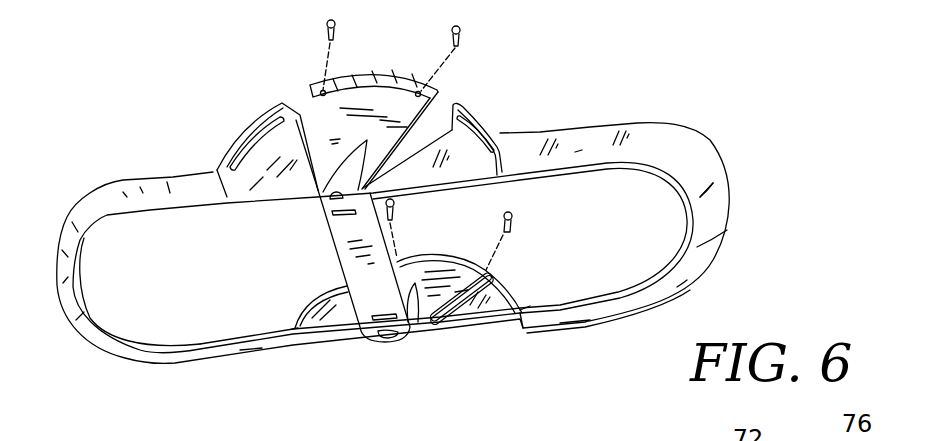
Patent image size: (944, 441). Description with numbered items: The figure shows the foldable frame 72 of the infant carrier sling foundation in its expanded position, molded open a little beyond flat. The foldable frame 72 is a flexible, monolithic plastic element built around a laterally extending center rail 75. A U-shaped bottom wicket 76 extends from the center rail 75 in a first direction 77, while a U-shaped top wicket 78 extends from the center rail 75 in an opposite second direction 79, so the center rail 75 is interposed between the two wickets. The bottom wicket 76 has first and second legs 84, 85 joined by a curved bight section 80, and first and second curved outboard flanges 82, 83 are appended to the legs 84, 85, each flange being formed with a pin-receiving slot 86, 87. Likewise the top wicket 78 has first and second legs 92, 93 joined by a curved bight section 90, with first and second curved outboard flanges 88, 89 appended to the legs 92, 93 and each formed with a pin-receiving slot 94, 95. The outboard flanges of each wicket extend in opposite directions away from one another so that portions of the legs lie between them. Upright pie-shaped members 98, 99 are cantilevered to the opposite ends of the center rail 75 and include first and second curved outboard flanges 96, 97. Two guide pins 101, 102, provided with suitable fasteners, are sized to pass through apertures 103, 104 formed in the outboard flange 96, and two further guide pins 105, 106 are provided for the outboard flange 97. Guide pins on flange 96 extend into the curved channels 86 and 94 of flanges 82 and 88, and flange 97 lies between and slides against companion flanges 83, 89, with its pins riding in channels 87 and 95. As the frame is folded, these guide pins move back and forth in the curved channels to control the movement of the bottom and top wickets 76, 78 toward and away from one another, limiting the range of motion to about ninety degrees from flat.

The foldable frame 72 is at (688, 118).
The center rail 75 is at (343, 236).
The U-shaped bottom wicket 76 is at (750, 188).
The first direction 77 is at (538, 370).
The U-shaped top wicket 78 is at (68, 330).
The second direction 79 is at (165, 402).
The curved bight section 80 is at (703, 180).
The first curved outboard flange 82 is at (480, 117).
The second curved outboard flange 83 is at (523, 300).
The first leg 84 is at (578, 152).
The second leg 85 is at (570, 320).
The pin-receiving slot 86 is at (498, 124).
The pin-receiving slot 87 is at (540, 298).
The first curved outboard flange 88 is at (281, 103).
The second curved outboard flange 89 is at (330, 297).
The curved bight section 90 is at (75, 243).
The first leg 92 is at (188, 203).
The second leg 93 is at (260, 350).
The pin-receiving slot 94 is at (232, 152).
The pin-receiving slot 95 is at (290, 320).
The first curved outboard flange 96 is at (372, 71).
The second curved outboard flange 97 is at (512, 290).
The upright pie-shaped member 98 is at (452, 91).
The upright pie-shaped member 99 is at (464, 250).
The guide pin 101 is at (461, 38).
The guide pin 102 is at (326, 27).
The aperture 103 is at (411, 86).
The aperture 104 is at (313, 100).
The guide pin 105 is at (514, 217).
The guide pin 106 is at (396, 212).